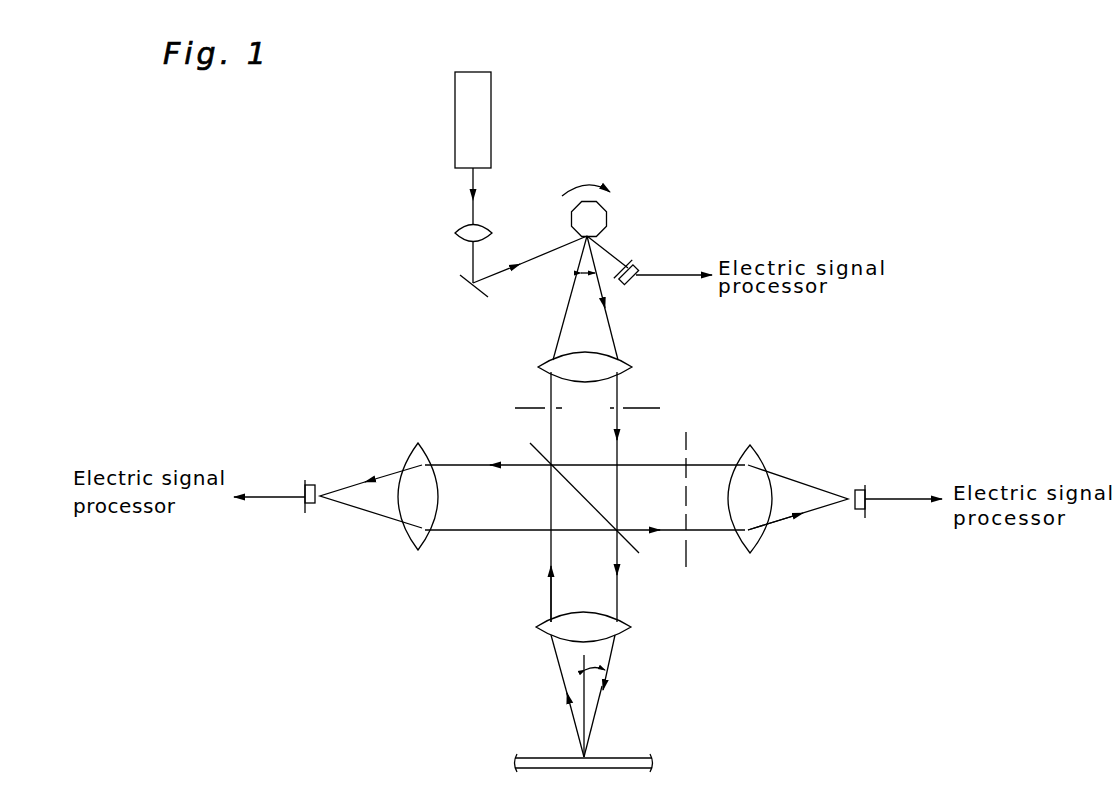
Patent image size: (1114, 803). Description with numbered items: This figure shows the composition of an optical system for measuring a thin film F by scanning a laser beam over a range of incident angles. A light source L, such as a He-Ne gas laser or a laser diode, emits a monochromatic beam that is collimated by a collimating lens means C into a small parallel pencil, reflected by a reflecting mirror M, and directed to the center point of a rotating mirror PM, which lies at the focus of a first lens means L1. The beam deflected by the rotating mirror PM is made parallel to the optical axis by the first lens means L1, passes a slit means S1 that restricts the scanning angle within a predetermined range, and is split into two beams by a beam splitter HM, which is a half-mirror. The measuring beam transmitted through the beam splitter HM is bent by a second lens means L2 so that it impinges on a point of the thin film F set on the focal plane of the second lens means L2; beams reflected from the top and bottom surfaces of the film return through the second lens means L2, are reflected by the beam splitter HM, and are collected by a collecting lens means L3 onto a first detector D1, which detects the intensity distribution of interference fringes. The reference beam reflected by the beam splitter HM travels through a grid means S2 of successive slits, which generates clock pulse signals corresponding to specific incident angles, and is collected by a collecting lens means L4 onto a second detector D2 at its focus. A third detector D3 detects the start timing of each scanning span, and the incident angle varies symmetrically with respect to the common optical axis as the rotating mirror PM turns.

The light source L is at (491, 85).
The collimating lens means C is at (455, 232).
The reflecting mirror M is at (460, 282).
The rotating mirror PM is at (607, 207).
The third detector D3 is at (642, 262).
The first lens means L1 is at (630, 364).
The slit means S1 is at (533, 406).
The scanning direction A is at (602, 416).
The beam splitter HM is at (530, 444).
The grid means S2 is at (687, 443).
The collecting lens means L3 is at (428, 535).
The collecting lens means L4 is at (765, 540).
The first detector D1 is at (313, 505).
The second detector D2 is at (862, 490).
The second lens means L2 is at (631, 627).
The thin film F is at (632, 758).